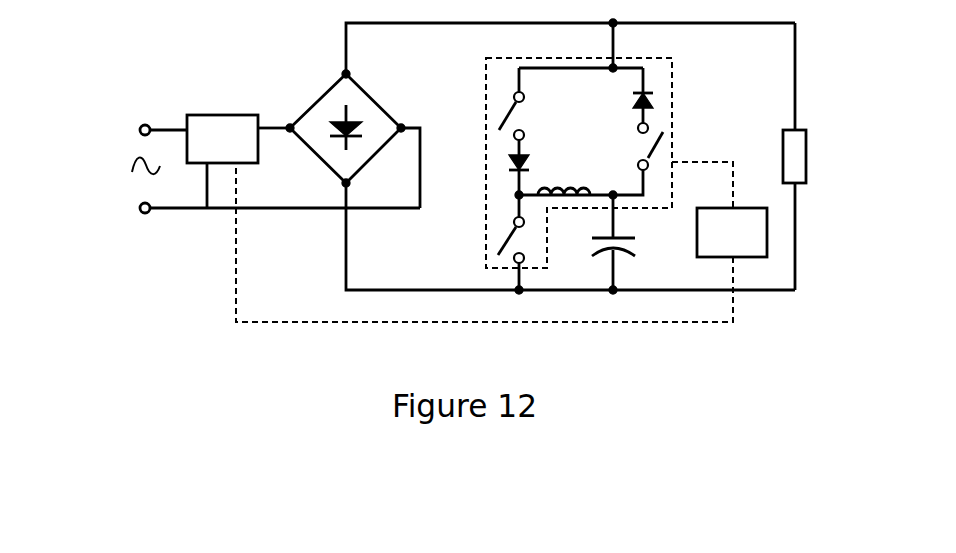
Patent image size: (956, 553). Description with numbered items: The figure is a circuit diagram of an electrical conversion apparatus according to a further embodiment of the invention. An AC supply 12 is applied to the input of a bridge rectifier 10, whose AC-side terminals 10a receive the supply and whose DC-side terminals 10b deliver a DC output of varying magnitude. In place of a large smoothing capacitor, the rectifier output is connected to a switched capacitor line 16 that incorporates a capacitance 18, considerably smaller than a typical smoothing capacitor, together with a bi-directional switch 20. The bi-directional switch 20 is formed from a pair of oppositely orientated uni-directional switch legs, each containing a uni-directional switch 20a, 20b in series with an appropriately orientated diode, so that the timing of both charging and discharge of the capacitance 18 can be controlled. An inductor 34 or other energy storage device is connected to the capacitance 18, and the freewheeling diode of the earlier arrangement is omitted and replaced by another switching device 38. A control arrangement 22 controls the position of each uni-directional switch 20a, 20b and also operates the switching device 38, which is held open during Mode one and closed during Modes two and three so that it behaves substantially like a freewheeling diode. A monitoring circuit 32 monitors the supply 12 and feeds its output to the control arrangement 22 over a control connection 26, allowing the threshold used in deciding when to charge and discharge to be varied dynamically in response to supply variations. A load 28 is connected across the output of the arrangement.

The bridge rectifier 10 is at (332, 118).
The AC input terminals of rectifier 10a is at (290, 128).
The DC output terminals of rectifier 10b is at (345, 74).
The supply 12 is at (130, 164).
The switched capacitor line 16 is at (612, 38).
The capacitance 18 is at (638, 245).
The bi-directional switch 20 is at (668, 57).
The uni-directional switch 20a is at (505, 129).
The uni-directional switch 20b is at (658, 134).
The control arrangement 22 is at (719, 209).
The threshold level 26 is at (235, 280).
The load 28 is at (809, 156).
The monitoring circuit 32 is at (238, 161).
The inductor 34 is at (565, 177).
The switching device 38 is at (500, 252).